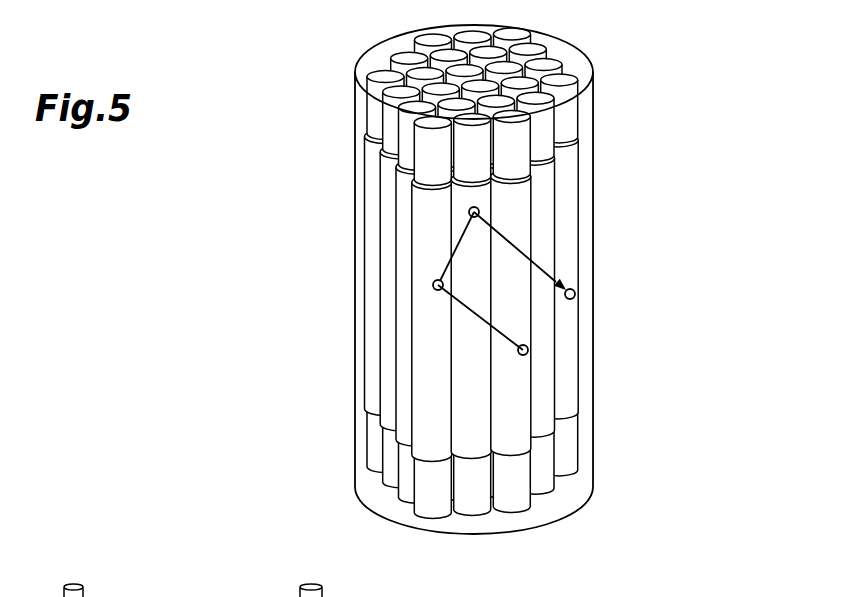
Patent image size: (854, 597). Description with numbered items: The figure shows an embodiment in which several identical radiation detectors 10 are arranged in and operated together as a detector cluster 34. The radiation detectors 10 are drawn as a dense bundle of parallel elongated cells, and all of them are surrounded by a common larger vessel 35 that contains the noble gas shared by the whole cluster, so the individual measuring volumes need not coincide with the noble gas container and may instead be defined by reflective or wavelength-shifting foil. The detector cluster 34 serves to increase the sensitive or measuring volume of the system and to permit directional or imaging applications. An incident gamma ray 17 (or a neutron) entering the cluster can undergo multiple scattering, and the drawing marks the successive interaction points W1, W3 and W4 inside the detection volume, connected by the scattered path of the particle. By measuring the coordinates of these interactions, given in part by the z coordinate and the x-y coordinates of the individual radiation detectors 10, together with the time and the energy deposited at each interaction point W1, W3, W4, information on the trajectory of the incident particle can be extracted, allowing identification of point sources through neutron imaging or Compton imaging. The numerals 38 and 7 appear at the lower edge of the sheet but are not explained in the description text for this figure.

The detector cluster 34 is at (376, 279).
The larger vessel 35 is at (358, 113).
The radiation detector 10 is at (425, 315).
The interaction point W3 is at (479, 210).
The interaction point W4 is at (575, 293).
The interaction point W1 is at (439, 290).
The incident gamma ray 17 is at (527, 353).
The rod end (adjacent figure) 38 is at (268, 596).
The rod end (adjacent figure) 7 is at (17, 596).